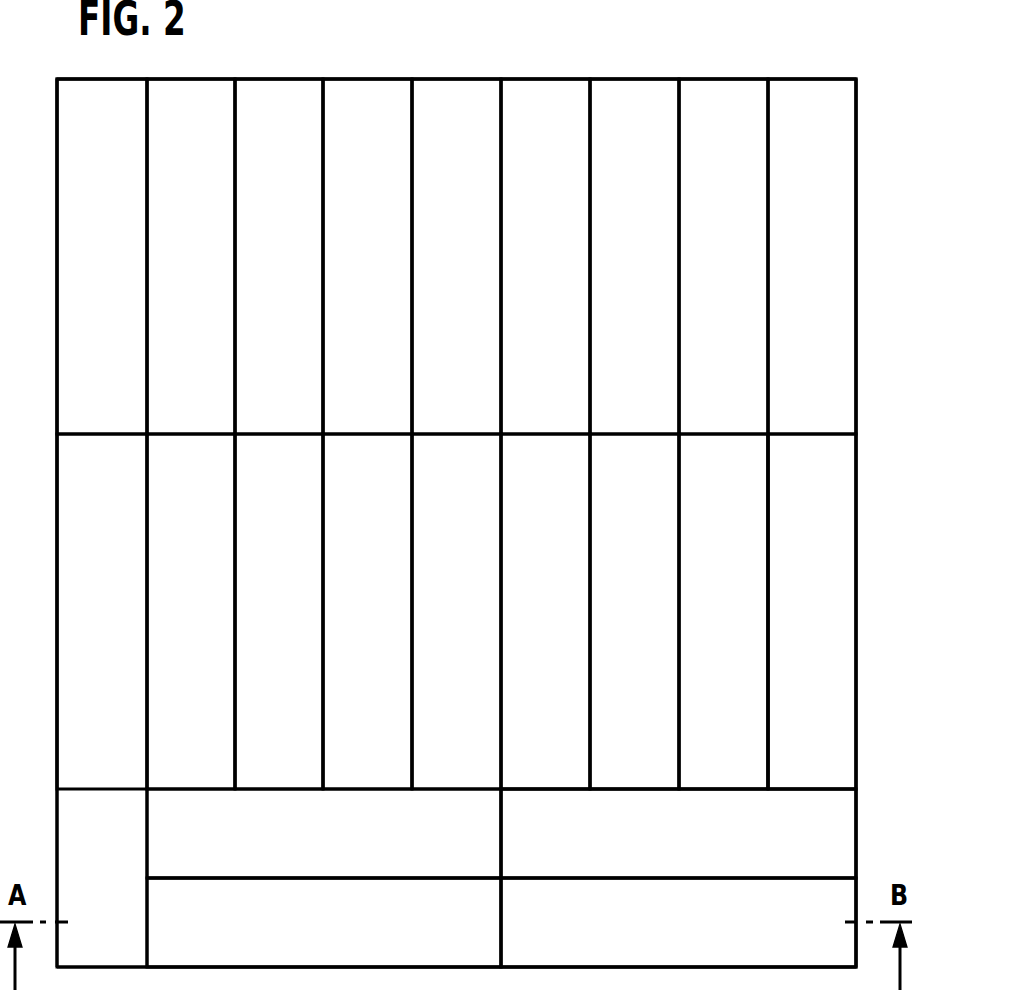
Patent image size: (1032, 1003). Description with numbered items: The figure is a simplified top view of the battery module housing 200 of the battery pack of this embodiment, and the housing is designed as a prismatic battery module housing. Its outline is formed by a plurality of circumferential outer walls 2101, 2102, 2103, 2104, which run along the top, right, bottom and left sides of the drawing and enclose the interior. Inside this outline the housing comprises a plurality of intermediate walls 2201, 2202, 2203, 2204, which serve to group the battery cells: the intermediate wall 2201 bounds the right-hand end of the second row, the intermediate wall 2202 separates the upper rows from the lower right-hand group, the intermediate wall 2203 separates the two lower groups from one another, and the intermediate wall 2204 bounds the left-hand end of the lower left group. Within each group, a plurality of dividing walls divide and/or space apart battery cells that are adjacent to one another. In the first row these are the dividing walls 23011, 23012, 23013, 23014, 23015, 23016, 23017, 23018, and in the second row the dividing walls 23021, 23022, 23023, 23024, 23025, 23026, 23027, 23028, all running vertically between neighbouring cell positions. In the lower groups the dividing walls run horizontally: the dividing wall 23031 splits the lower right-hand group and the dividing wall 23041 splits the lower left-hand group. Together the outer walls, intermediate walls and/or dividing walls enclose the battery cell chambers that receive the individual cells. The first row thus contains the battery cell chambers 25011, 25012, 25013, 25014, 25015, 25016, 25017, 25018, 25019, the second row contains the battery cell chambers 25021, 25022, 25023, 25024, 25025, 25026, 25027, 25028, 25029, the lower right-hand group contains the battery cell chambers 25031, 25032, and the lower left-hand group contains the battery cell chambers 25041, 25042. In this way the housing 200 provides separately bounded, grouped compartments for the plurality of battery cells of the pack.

The battery module housing 200 is at (344, 68).
The outer wall 2101 is at (612, 79).
The outer wall 2102 is at (857, 487).
The outer wall 2103 is at (210, 968).
The outer wall 2104 is at (56, 487).
The intermediate wall 2201 is at (770, 436).
The intermediate wall 2202 is at (745, 792).
The intermediate wall 2203 is at (502, 812).
The intermediate wall 2204 is at (145, 812).
The dividing wall 23011 is at (767, 184).
The dividing wall 23012 is at (678, 184).
The dividing wall 23013 is at (589, 184).
The dividing wall 23014 is at (500, 184).
The dividing wall 23015 is at (411, 184).
The dividing wall 23016 is at (323, 184).
The dividing wall 23017 is at (235, 184).
The dividing wall 23018 is at (145, 184).
The dividing wall 23021 is at (767, 540).
The dividing wall 23022 is at (678, 540).
The dividing wall 23023 is at (589, 540).
The dividing wall 23024 is at (500, 540).
The dividing wall 23025 is at (411, 540).
The dividing wall 23026 is at (323, 540).
The dividing wall 23027 is at (235, 540).
The dividing wall 23028 is at (145, 540).
The dividing wall 23031 is at (745, 880).
The dividing wall 23041 is at (172, 879).
The battery cell chamber 25011 is at (812, 256).
The battery cell chamber 25012 is at (723, 256).
The battery cell chamber 25013 is at (634, 256).
The battery cell chamber 25014 is at (545, 256).
The battery cell chamber 25015 is at (456, 256).
The battery cell chamber 25016 is at (367, 256).
The battery cell chamber 25017 is at (279, 256).
The battery cell chamber 25018 is at (191, 256).
The battery cell chamber 25019 is at (102, 256).
The battery cell chamber 25021 is at (812, 611).
The battery cell chamber 25022 is at (723, 611).
The battery cell chamber 25023 is at (634, 611).
The battery cell chamber 25024 is at (545, 611).
The battery cell chamber 25025 is at (456, 611).
The battery cell chamber 25026 is at (367, 611).
The battery cell chamber 25027 is at (279, 611).
The battery cell chamber 25028 is at (191, 611).
The battery cell chamber 25029 is at (102, 611).
The battery cell chamber 25031 is at (678, 833).
The battery cell chamber 25032 is at (678, 922).
The battery cell chamber 25041 is at (324, 833).
The battery cell chamber 25042 is at (324, 922).